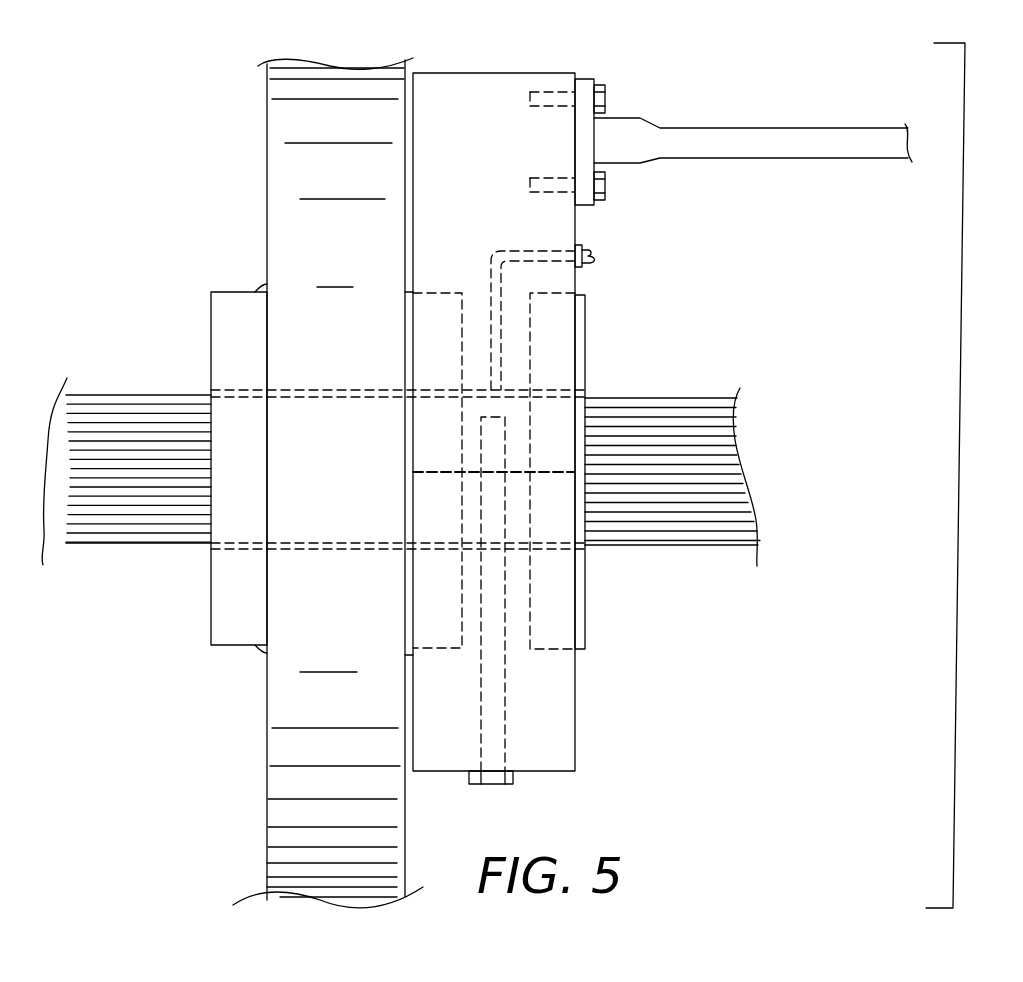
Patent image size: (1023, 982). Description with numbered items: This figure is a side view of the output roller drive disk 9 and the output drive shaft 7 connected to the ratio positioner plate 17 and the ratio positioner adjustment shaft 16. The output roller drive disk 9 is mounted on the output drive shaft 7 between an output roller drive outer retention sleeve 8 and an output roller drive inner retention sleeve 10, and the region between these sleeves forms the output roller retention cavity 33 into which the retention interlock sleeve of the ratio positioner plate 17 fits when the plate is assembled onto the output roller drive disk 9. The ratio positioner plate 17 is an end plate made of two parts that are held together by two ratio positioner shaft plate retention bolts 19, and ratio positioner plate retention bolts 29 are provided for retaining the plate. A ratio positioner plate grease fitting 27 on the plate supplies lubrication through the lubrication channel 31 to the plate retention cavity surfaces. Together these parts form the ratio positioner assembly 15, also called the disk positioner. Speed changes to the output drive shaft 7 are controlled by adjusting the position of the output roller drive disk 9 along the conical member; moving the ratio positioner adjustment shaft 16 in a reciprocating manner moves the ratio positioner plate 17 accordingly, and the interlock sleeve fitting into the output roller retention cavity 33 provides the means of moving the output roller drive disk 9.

The output drive shaft 7 is at (118, 395).
The output roller drive outer retention sleeve 8 is at (587, 328).
The output roller drive disk 9 is at (266, 158).
The output roller drive inner retention sleeve 10 is at (228, 325).
The ratio positioner assembly 15 is at (958, 466).
The ratio positioner adjustment shaft 16 is at (790, 128).
The ratio positioner plate 17 is at (455, 72).
The ratio positioner shaft plate retention bolts 19 is at (513, 780).
The ratio positioner plate grease fitting 27 is at (597, 256).
The ratio positioner plate retention bolts 29 is at (606, 101).
The lubrication channel 31 is at (495, 248).
The output roller retention cavity 33 is at (685, 395).